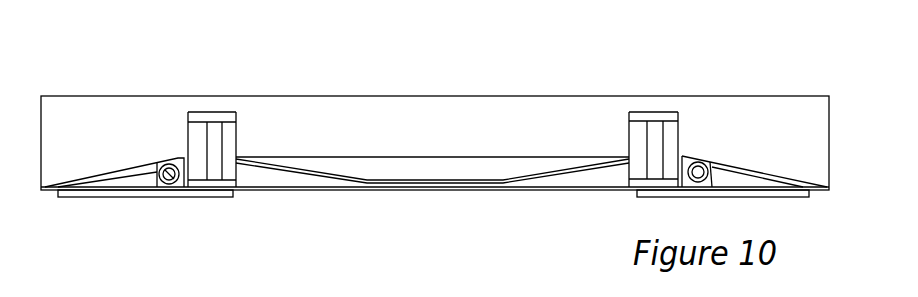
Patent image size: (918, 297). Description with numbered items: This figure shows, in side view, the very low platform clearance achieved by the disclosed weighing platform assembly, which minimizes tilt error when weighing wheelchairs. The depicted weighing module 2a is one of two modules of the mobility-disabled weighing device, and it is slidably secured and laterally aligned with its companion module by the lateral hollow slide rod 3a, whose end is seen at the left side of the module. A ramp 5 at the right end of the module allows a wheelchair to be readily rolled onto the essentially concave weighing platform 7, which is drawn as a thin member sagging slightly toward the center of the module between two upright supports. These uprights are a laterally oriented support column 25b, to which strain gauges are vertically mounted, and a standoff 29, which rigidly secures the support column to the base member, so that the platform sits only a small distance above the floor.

The weighing module 2a is at (742, 96).
The lateral hollow slide rod 3a is at (163, 168).
The ramp 5 is at (736, 157).
The weighing platform 7 is at (465, 180).
The support column 25b is at (635, 138).
The standoff 29 is at (213, 130).